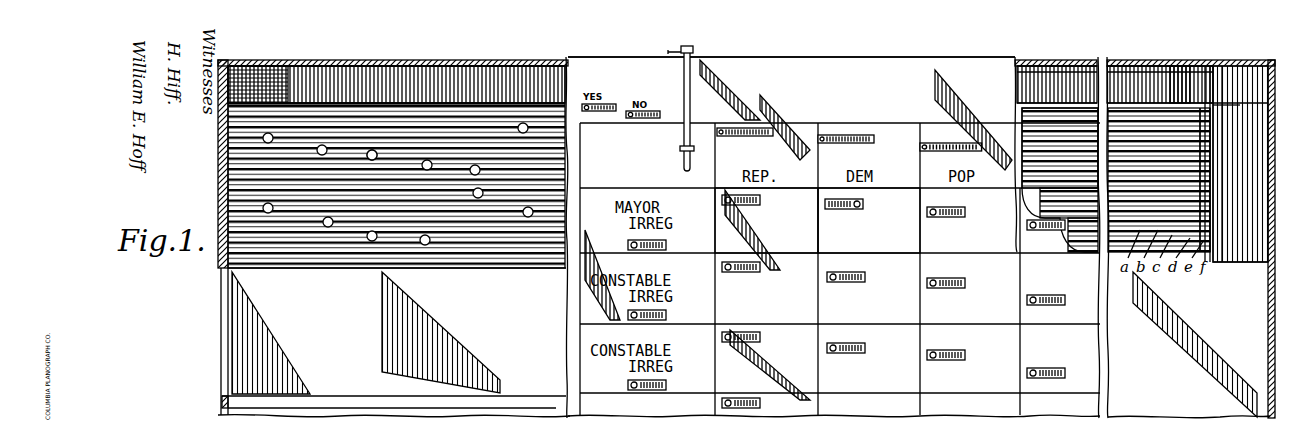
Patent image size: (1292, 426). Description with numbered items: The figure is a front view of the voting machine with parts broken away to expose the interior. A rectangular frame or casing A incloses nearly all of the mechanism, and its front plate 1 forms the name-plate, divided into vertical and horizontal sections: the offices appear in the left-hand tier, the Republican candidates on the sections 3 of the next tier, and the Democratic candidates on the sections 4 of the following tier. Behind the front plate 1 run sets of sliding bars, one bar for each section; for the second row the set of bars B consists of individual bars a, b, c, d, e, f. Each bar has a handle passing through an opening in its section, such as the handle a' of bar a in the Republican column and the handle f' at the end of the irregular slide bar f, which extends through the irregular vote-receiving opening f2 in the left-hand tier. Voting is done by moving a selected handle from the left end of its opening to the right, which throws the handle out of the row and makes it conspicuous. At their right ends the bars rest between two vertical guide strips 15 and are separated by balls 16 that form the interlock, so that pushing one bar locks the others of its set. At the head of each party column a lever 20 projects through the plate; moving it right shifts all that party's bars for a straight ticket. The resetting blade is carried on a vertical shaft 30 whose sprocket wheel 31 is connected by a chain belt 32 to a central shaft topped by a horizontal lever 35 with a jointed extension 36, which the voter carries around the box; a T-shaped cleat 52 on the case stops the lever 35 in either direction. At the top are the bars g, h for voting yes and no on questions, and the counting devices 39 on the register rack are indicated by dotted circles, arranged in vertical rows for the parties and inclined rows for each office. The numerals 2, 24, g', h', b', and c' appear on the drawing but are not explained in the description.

The front plate 1 is at (848, 89).
The section line / row indicator 2 is at (590, 222).
The sections 3 is at (766, 220).
The sections 4 is at (869, 220).
The vertical guide strips 15 is at (1222, 76).
The balls 16 is at (1210, 226).
The lever 20 is at (920, 150).
The guide bar 24 is at (1182, 76).
The vertical shaft 30 is at (1215, 180).
The sprocket wheel 31 is at (1236, 120).
The chain belt 32 is at (1018, 108).
The horizontal lever 35 is at (695, 48).
The jointed extension 36 is at (690, 96).
The counting devices 39 is at (402, 150).
The T-shaped cleat 52 is at (668, 51).
The frame or casing A is at (835, 56).
The set of bars B is at (1095, 215).
The bar a is at (284, 249).
The bar b is at (316, 252).
The bar c is at (352, 254).
The bar d is at (405, 220).
The bar e is at (438, 225).
The irregular slide bar f is at (458, 262).
The bar g is at (396, 86).
The bar h is at (417, 100).
The YES lever g' is at (599, 127).
The NO lever h' is at (643, 130).
The handle a' is at (741, 211).
The candidate lever b' is at (859, 205).
The candidate lever c' is at (958, 209).
The handle f' is at (629, 247).
The irregular vote-receiving opening f2 is at (666, 245).